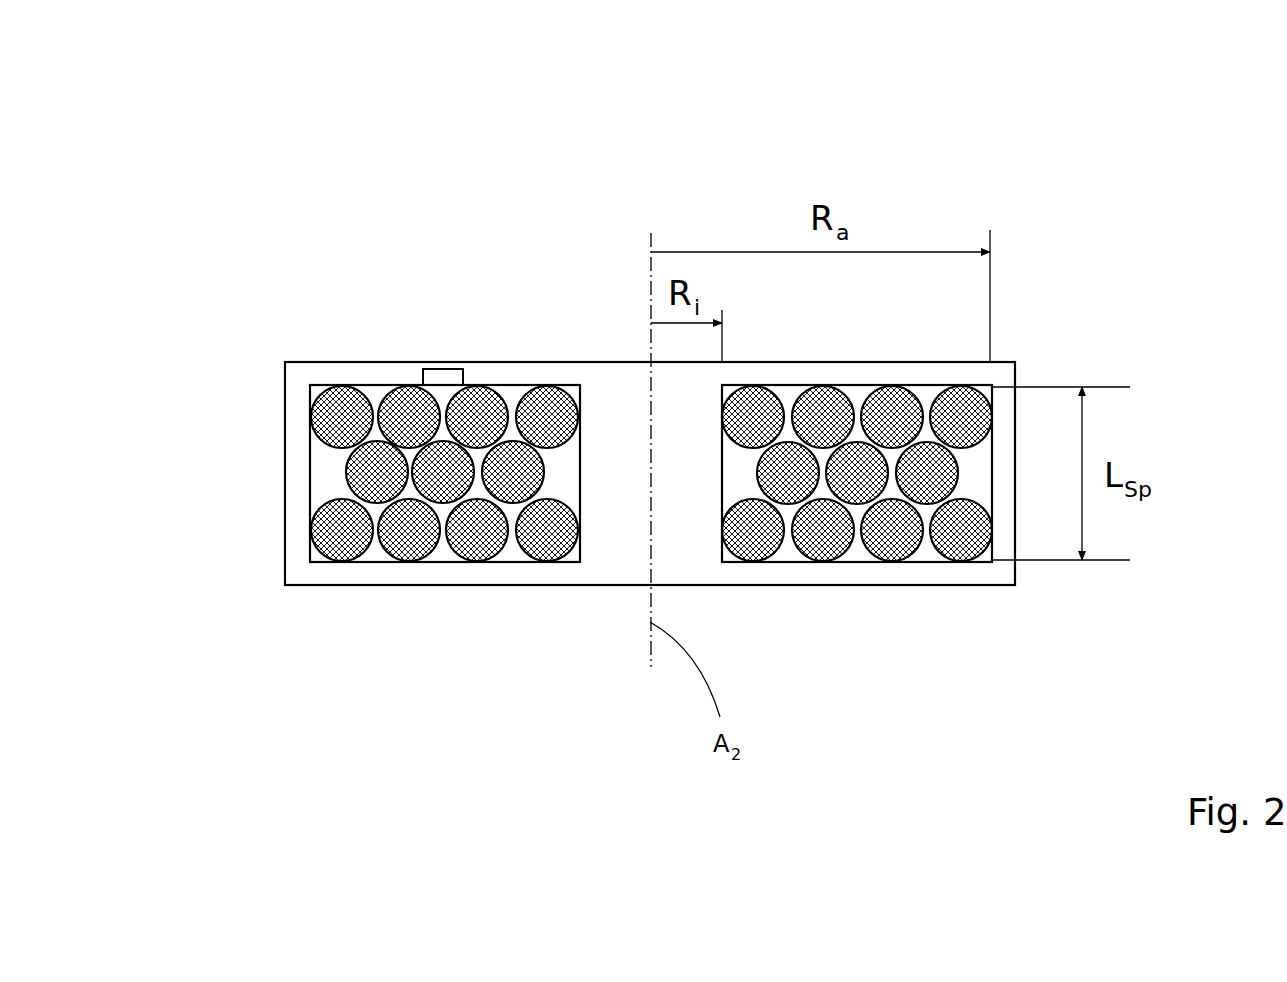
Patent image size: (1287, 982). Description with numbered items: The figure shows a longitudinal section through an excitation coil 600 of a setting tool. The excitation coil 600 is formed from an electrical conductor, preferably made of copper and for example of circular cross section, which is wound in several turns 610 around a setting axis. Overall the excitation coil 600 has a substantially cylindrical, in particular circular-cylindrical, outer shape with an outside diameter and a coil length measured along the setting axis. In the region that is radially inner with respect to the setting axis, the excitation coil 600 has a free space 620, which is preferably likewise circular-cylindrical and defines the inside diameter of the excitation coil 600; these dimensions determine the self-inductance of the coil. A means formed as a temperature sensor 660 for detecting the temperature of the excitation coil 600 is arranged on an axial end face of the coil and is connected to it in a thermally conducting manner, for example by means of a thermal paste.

The excitation coil 600 is at (243, 120).
The turns 610 is at (517, 482).
The free space 620 is at (625, 468).
The temperature sensor 660 is at (445, 378).